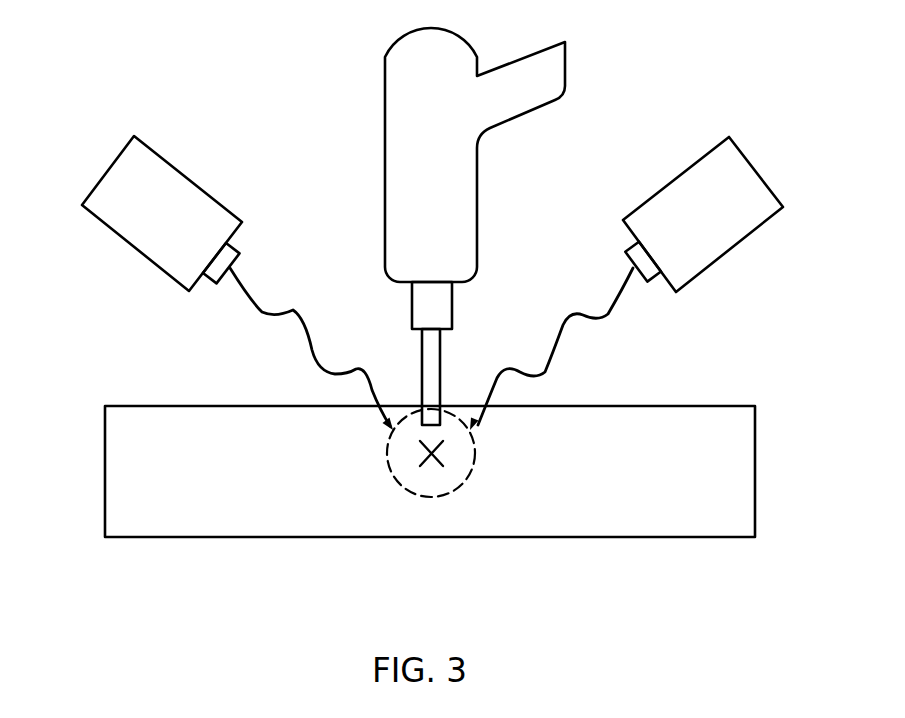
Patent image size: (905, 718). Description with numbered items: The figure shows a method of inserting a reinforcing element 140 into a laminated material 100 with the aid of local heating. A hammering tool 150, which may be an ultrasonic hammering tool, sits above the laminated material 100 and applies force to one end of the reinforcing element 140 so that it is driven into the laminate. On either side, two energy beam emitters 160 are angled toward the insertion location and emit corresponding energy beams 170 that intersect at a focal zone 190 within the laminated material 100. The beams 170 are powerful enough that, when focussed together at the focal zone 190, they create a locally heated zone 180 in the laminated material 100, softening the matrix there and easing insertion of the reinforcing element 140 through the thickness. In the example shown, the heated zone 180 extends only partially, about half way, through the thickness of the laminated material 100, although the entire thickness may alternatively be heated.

The laminated material 100 is at (687, 432).
The reinforcing element 140 is at (430, 360).
The hammering tool 150 is at (452, 178).
The energy beam emitter 160 is at (127, 182).
The energy beam 170 is at (259, 325).
The locally heated zone 180 is at (420, 498).
The focal zone 190 is at (436, 471).